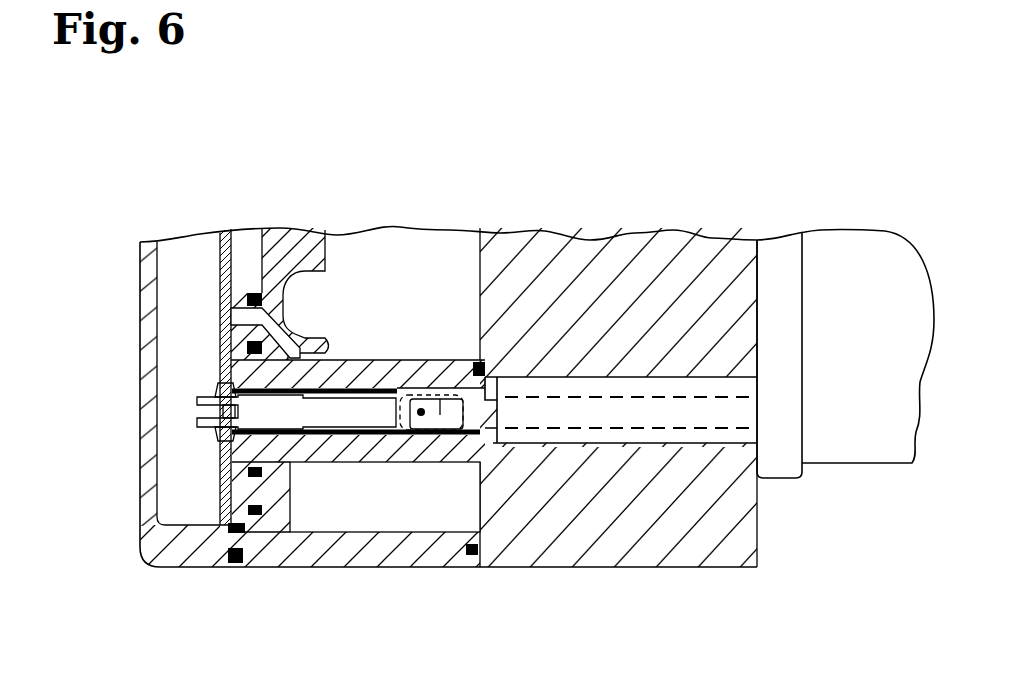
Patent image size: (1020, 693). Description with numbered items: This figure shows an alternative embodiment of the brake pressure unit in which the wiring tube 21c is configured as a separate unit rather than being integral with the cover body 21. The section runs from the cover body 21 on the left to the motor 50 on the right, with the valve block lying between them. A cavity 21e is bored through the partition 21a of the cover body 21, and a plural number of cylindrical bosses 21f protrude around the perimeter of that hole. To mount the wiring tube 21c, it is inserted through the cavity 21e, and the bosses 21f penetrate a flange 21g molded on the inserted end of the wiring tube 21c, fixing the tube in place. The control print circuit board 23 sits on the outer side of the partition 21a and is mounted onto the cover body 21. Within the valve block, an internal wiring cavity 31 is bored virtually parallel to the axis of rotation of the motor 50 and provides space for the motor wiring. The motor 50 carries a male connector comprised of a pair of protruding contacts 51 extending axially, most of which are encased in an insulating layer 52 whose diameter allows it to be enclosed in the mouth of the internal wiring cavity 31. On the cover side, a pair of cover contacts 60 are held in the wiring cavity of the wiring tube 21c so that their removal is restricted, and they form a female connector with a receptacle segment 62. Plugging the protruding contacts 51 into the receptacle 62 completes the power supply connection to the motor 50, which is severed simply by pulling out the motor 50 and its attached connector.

The cover body 21 is at (162, 574).
The partition 21a is at (333, 256).
The wiring tube 21c is at (390, 360).
The cavity 21e is at (223, 378).
The cylindrical bosses 21f is at (290, 496).
The flange 21g is at (257, 293).
The control print circuit board 23 is at (205, 266).
The internal wiring cavity 31 is at (656, 440).
The motor 50 is at (872, 238).
The protruding contacts 51 is at (498, 378).
The insulating layer 52 is at (709, 384).
The cover contacts 60 is at (385, 424).
The receptacle segment 62 is at (424, 405).